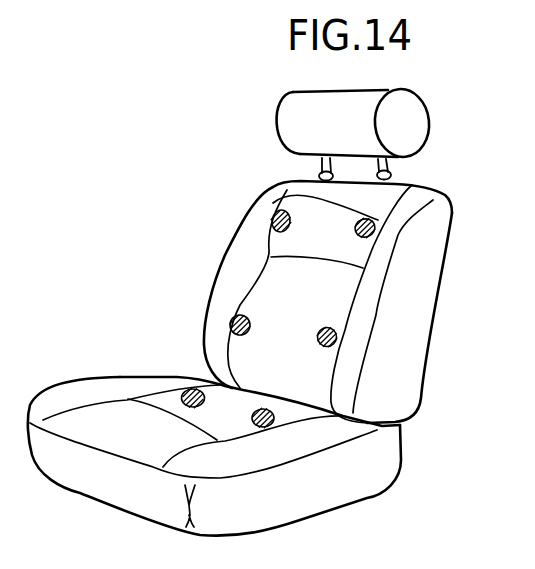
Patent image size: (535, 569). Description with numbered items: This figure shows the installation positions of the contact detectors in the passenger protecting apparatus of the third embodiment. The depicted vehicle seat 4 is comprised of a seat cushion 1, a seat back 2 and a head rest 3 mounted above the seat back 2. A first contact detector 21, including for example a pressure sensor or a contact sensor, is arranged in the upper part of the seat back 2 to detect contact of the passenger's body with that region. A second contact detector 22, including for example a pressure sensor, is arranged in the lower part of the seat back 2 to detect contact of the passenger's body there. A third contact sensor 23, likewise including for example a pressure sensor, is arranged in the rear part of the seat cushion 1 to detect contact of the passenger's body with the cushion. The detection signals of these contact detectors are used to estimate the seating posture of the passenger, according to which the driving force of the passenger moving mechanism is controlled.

The seat cushion 1 is at (352, 502).
The seat back 2 is at (440, 276).
The head rest 3 is at (419, 110).
The seat 4 is at (433, 348).
The first contact detector 21 is at (357, 219).
The second contact detector 22 is at (321, 330).
The third contact sensor 23 is at (257, 409).